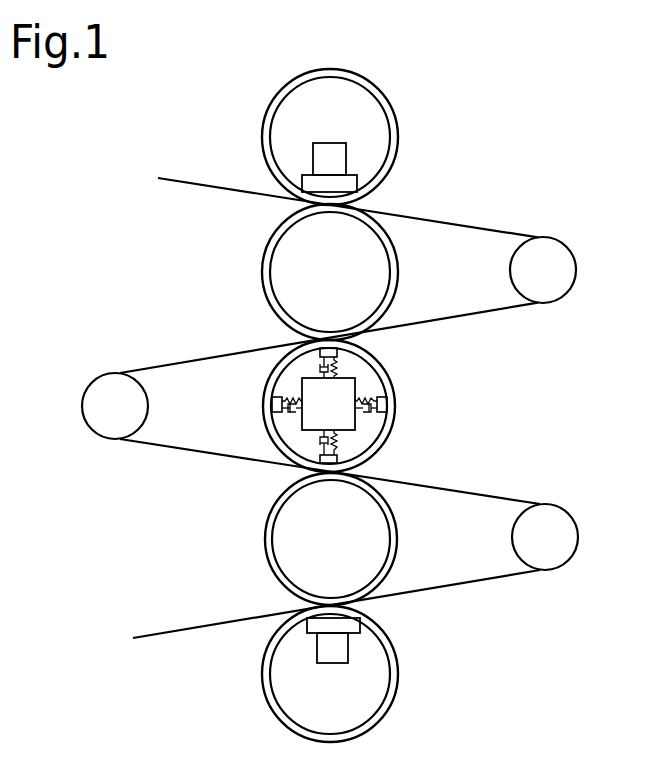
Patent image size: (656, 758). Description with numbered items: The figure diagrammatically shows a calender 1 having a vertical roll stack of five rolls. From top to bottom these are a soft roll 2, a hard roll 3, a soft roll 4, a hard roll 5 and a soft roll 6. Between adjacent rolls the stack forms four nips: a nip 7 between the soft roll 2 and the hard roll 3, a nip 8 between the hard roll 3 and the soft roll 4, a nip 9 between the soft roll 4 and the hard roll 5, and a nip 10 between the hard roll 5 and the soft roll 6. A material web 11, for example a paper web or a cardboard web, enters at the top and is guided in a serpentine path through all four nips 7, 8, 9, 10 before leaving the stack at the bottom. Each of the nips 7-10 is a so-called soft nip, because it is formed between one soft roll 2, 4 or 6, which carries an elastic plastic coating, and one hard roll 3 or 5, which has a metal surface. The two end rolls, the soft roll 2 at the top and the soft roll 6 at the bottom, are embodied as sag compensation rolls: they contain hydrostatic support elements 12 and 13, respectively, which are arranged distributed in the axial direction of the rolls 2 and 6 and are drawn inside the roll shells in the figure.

The calender 1 is at (232, 64).
The soft roll 2 is at (375, 140).
The hard roll 3 is at (378, 275).
The soft roll 4 is at (378, 385).
The hard roll 5 is at (378, 543).
The soft roll 6 is at (380, 680).
The nip 7 is at (295, 206).
The nip 8 is at (280, 352).
The nip 9 is at (300, 470).
The nip 10 is at (285, 620).
The material web 11 is at (175, 182).
The hydrostatic support elements 12 is at (343, 185).
The hydrostatic support elements 13 is at (360, 627).